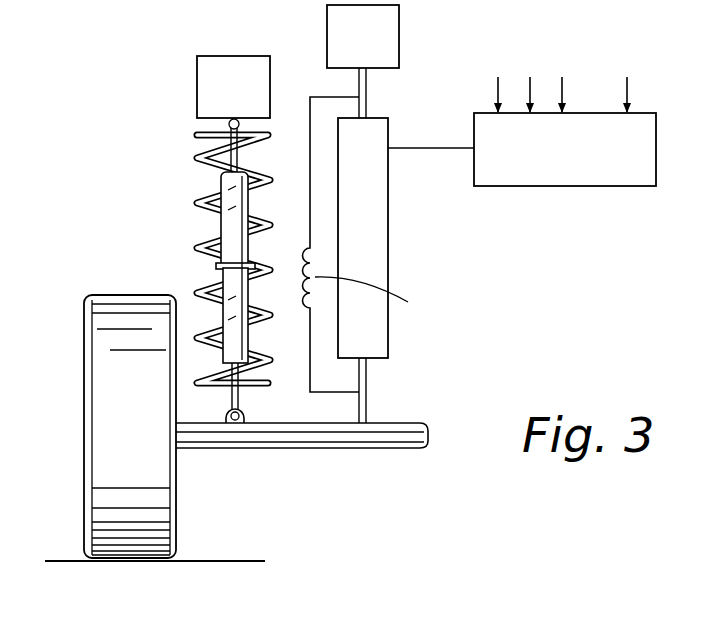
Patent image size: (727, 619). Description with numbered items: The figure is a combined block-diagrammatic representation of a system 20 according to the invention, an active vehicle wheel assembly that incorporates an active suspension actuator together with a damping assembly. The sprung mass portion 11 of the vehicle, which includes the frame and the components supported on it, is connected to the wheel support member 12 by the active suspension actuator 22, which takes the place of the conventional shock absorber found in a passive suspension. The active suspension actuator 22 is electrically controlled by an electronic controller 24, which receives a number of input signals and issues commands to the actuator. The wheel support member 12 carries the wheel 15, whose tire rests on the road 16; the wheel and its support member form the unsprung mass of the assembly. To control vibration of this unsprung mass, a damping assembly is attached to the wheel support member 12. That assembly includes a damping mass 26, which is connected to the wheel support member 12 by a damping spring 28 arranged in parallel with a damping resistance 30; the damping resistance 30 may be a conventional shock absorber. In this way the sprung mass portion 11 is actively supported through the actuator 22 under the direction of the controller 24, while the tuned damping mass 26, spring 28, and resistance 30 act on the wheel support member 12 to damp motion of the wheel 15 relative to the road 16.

The sprung mass portion 11 is at (399, 33).
The wheel support member 12 is at (322, 448).
The wheel 15 is at (80, 410).
The road 16 is at (232, 560).
The system 20 is at (124, 182).
The active suspension actuator 22 is at (378, 208).
The electronic controller 24 is at (597, 186).
The damping mass 26 is at (197, 80).
The damping spring 28 is at (220, 195).
The damping resistance 30 is at (216, 233).